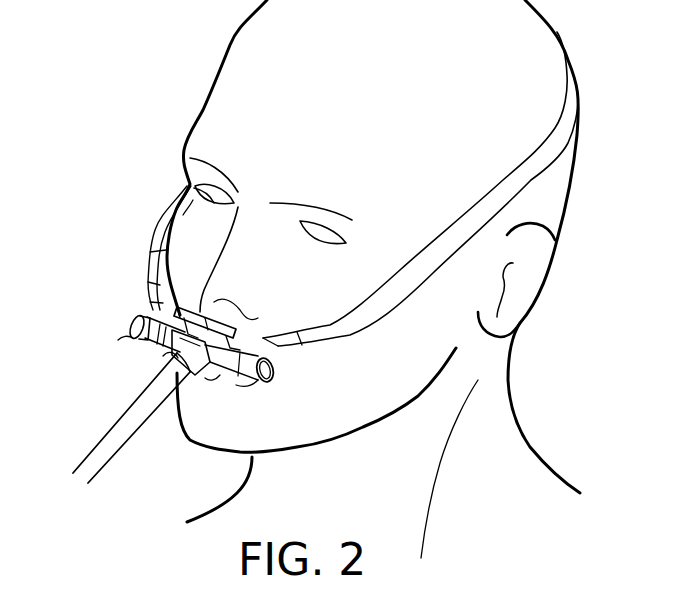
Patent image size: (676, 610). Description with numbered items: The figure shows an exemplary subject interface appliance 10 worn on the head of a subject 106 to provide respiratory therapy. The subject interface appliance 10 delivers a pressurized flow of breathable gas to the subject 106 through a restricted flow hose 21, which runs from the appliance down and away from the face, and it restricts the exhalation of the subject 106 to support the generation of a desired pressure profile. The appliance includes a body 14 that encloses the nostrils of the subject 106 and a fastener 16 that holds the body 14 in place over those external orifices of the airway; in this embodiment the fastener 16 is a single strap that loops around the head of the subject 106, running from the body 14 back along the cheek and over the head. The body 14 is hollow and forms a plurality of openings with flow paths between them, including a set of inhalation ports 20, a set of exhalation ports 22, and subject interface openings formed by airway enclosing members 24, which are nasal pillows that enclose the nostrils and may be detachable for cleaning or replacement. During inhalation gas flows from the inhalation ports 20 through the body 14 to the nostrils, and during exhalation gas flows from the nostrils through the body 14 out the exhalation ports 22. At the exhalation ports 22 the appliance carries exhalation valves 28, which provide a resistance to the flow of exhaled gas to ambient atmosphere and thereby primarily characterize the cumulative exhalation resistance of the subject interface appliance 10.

The subject 106 is at (403, 85).
The subject interface appliance 10 is at (140, 297).
The body 14 is at (285, 358).
The fastener 16 is at (155, 209).
The inhalation ports 20 is at (163, 358).
The restricted flow hose 21 is at (95, 460).
The exhalation ports 22 is at (119, 340).
The airway enclosing members 24 is at (195, 305).
The exhalation valves 28 is at (127, 324).